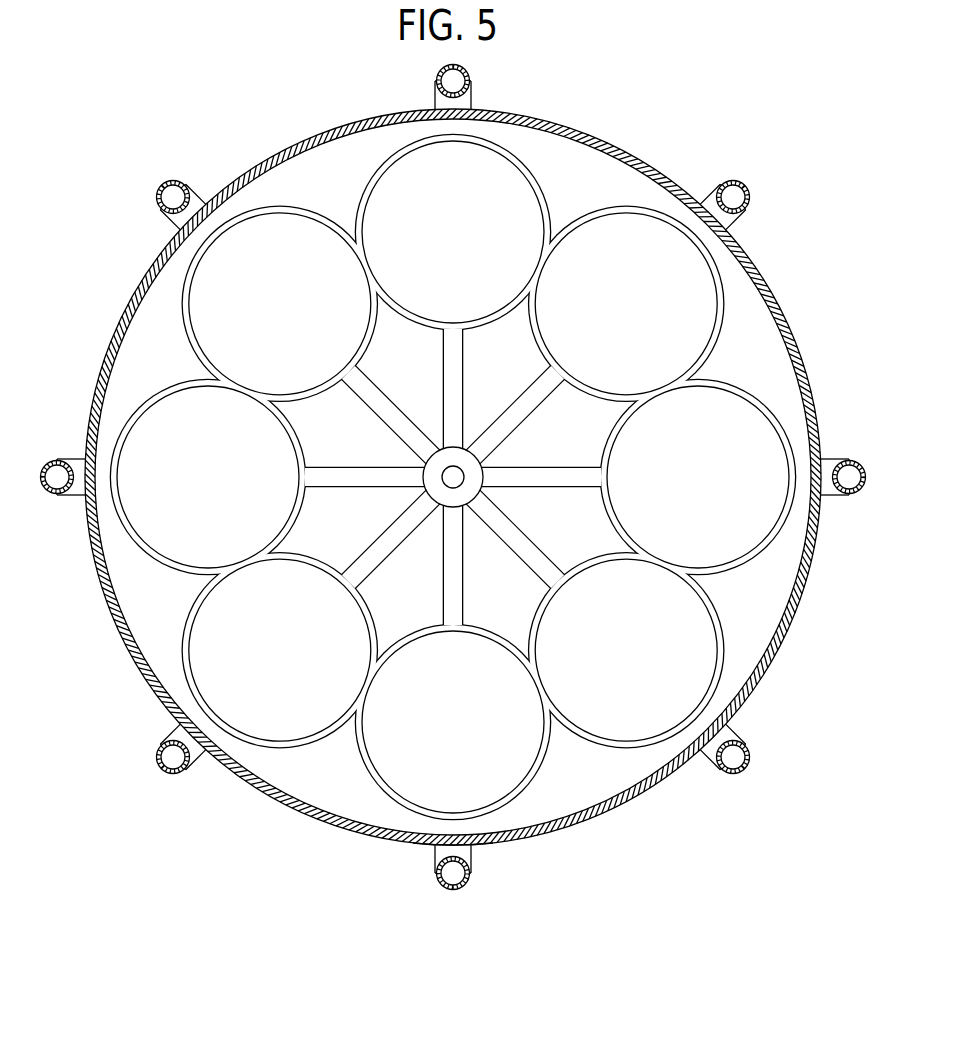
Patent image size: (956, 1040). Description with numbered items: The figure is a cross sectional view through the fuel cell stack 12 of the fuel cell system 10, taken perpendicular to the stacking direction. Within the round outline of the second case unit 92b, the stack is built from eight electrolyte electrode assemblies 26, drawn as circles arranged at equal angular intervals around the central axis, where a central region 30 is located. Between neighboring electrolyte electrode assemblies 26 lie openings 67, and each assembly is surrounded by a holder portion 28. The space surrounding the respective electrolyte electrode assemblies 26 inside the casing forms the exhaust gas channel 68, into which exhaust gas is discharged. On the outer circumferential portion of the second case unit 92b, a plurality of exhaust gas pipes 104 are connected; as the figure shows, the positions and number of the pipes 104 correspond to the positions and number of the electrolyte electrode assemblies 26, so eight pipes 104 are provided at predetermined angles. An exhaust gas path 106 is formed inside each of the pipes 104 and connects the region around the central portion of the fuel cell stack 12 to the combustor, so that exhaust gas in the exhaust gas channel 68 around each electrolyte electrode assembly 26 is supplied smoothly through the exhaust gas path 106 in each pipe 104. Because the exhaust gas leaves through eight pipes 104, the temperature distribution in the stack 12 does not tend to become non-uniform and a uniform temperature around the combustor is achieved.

The rotor assembly 10 is at (677, 122).
The fuel cell stack 12 is at (733, 309).
The electrolyte electrode assembly 26 is at (512, 722).
The holder ring 28 is at (370, 770).
The hub hole 30 is at (445, 445).
The opening between spokes 67 is at (453, 478).
The exhaust gas channel 68 is at (452, 477).
The second case unit 92b is at (415, 843).
The exhaust gas pipe 104 is at (432, 104).
The exhaust gas path 106 is at (456, 83).